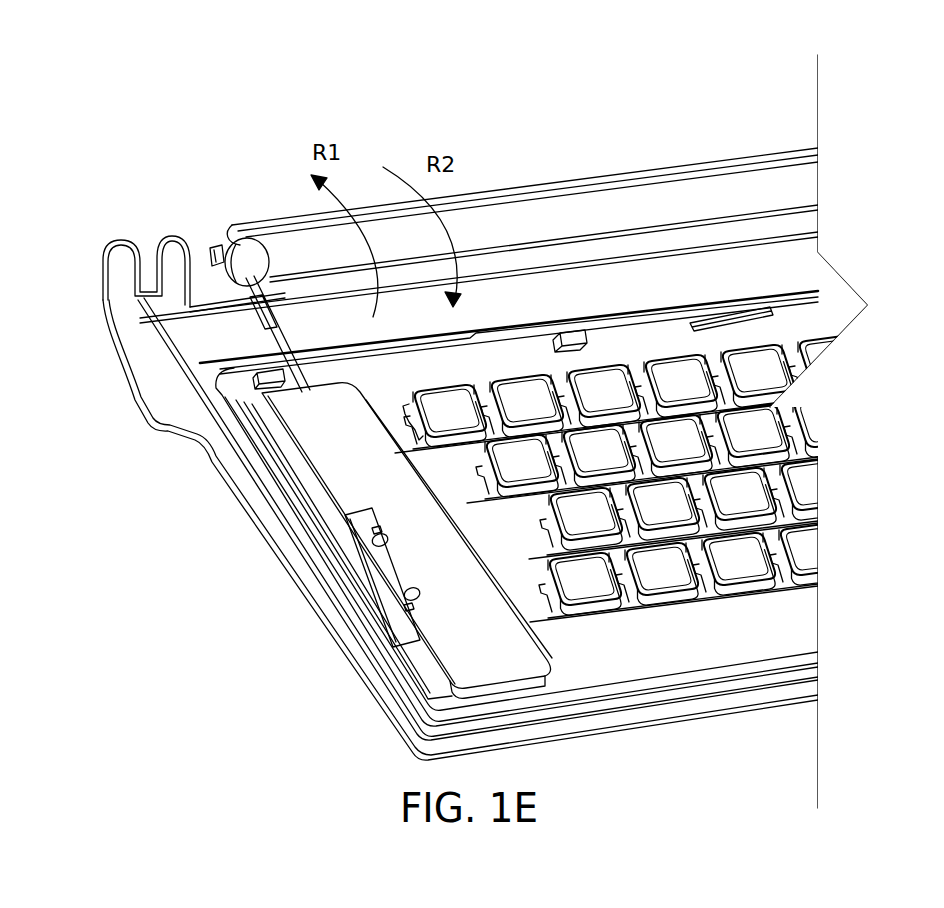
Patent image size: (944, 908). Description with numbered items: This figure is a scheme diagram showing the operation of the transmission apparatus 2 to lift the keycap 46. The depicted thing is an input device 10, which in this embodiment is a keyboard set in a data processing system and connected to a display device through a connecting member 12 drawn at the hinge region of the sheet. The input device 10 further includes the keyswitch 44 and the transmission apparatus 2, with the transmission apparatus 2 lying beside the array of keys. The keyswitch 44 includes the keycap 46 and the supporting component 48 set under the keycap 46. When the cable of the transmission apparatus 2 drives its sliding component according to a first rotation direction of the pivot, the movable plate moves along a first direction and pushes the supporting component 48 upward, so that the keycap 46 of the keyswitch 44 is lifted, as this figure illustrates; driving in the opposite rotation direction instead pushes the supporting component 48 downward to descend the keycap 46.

The input device 10 is at (545, 118).
The connecting member 12 is at (323, 263).
The transmission apparatus 2 is at (460, 637).
The keyswitch 44 is at (593, 585).
The keycap 46 is at (418, 418).
The supporting component 48 is at (418, 428).